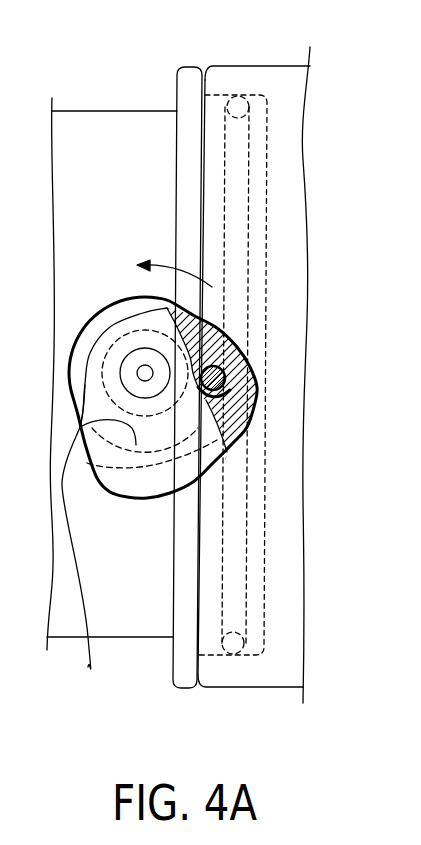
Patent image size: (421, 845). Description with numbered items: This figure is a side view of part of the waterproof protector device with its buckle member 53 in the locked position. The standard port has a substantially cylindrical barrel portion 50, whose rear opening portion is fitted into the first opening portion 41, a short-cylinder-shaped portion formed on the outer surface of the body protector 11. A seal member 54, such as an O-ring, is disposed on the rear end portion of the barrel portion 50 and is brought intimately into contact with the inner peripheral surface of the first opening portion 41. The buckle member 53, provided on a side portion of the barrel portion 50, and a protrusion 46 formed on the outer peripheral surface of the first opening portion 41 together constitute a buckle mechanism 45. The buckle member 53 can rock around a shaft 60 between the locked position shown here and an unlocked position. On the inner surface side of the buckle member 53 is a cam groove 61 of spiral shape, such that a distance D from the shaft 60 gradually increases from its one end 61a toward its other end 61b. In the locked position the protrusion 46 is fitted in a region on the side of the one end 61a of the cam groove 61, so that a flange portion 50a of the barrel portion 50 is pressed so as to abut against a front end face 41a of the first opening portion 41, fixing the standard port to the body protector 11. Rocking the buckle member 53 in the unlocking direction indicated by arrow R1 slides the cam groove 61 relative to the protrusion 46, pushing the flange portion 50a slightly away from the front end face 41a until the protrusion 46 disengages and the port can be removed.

The body protector 11 is at (292, 222).
The first opening portion 41 is at (278, 66).
The front end face 41a is at (201, 187).
The buckle mechanism 45 is at (100, 298).
The protrusion 46 is at (237, 332).
The barrel portion 50 is at (115, 110).
The flange portion 50a is at (187, 80).
The buckle member 53 is at (141, 480).
The seal member 54 is at (239, 97).
The shaft 60 is at (120, 463).
The cam groove 61 is at (210, 404).
The one end of the cam groove 61a is at (222, 394).
The other end of the cam groove 61b is at (82, 544).
The distance D is at (82, 427).
The unlocking direction arrow R1 is at (190, 272).